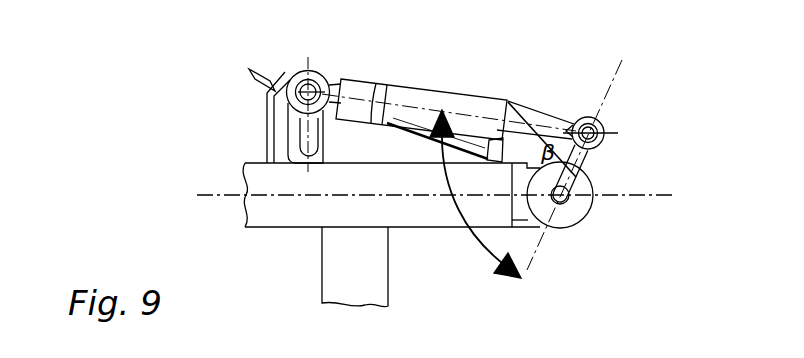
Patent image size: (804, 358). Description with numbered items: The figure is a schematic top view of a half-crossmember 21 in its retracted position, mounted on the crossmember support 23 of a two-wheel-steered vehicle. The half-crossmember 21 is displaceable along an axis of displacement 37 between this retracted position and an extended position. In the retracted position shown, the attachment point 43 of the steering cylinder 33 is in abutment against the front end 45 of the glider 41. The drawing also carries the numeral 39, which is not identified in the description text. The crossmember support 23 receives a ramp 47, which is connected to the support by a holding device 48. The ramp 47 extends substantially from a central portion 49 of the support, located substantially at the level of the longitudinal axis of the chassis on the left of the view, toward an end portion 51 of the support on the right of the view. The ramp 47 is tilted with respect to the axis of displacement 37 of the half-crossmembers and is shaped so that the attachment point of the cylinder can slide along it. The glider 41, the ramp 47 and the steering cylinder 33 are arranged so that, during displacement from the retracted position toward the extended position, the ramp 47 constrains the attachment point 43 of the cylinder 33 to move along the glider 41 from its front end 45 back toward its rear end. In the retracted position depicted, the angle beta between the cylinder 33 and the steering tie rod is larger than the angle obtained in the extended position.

The half-crossmember 21 is at (403, 229).
The crossmember support 23 is at (446, 229).
The cylinder 33 is at (467, 105).
The axis of displacement 37 is at (653, 194).
The actuating cylinder 39 is at (401, 82).
The glider 41 is at (288, 121).
The attachment point 43 is at (297, 82).
The front end 45 is at (316, 84).
The ramp 47 is at (500, 112).
The holding device 48 is at (267, 100).
The central portion 49 is at (285, 229).
The end portion 51 is at (491, 250).